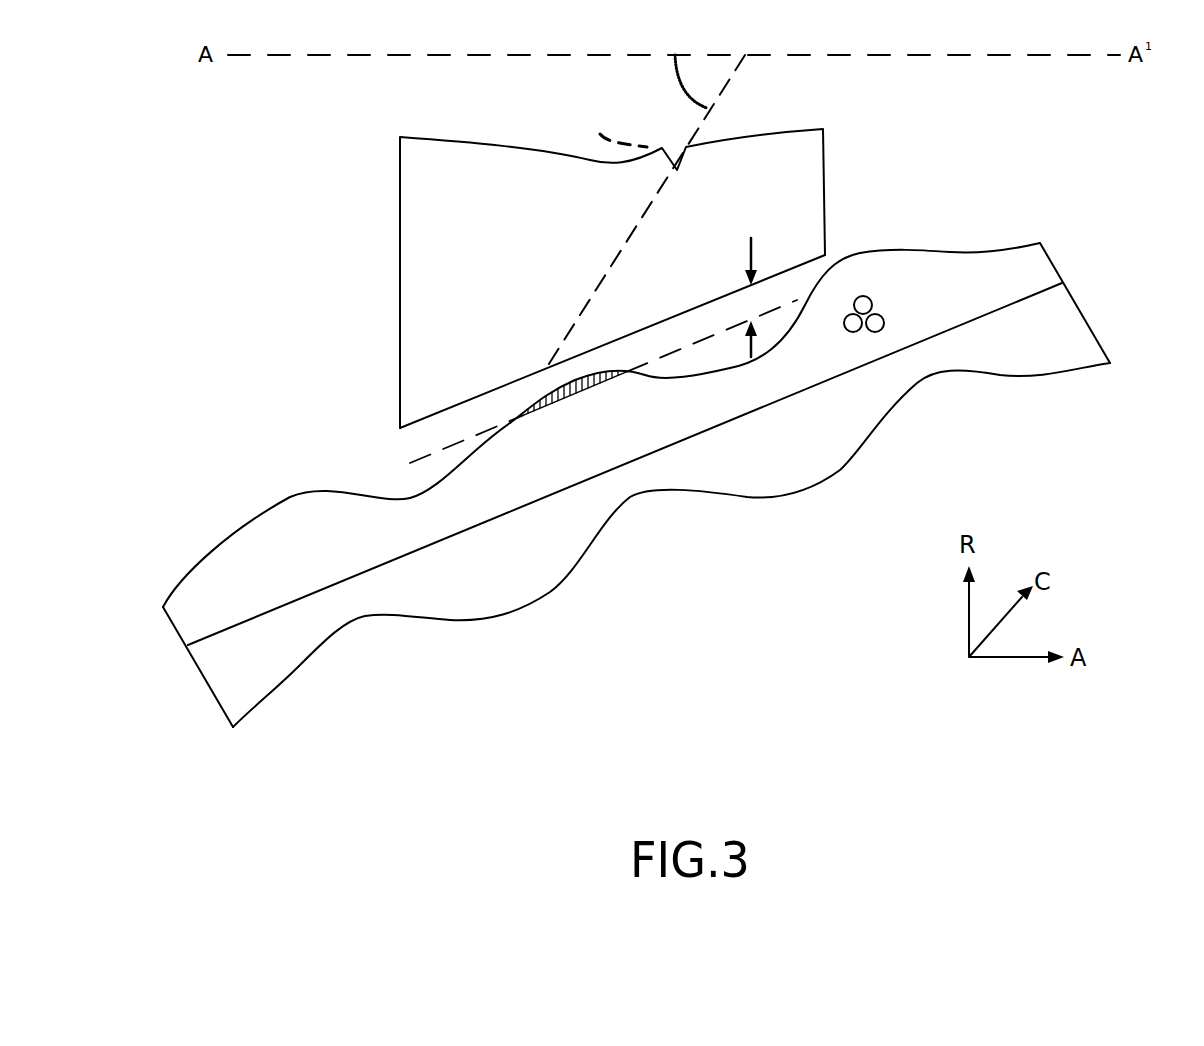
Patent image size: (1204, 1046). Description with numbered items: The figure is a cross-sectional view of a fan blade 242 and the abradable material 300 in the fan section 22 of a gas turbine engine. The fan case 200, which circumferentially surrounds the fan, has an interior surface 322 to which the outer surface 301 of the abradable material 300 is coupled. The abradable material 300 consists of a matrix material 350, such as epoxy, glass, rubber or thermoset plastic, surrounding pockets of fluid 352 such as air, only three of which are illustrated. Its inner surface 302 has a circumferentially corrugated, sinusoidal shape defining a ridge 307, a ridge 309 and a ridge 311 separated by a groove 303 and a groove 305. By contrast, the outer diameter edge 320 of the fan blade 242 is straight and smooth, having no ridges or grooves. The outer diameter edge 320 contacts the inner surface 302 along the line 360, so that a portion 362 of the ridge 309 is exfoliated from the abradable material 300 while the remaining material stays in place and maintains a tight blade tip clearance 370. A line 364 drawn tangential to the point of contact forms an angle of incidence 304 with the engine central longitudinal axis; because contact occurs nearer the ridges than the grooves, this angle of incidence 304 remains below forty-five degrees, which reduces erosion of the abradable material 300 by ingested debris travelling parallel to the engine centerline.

The fan section 22 is at (169, 124).
The fan case 200 is at (1070, 323).
The fan blade 242 is at (425, 193).
The abradable material 300 is at (1033, 270).
The outer surface 301 is at (302, 595).
The inner surface 302 is at (1002, 253).
The groove 303 is at (437, 472).
The angle of incidence 304 is at (662, 81).
The groove 305 is at (702, 360).
The ridge 307 is at (290, 503).
The ridge 309 is at (597, 373).
The ridge 311 is at (888, 262).
The outer diameter edge 320 is at (483, 393).
The interior surface 322 is at (350, 580).
The matrix material 350 is at (857, 297).
The pockets of fluid 352 is at (882, 320).
The line 360 is at (784, 336).
The portion 362 is at (560, 378).
The line 364 is at (600, 123).
The blade tip clearance 370 is at (751, 239).